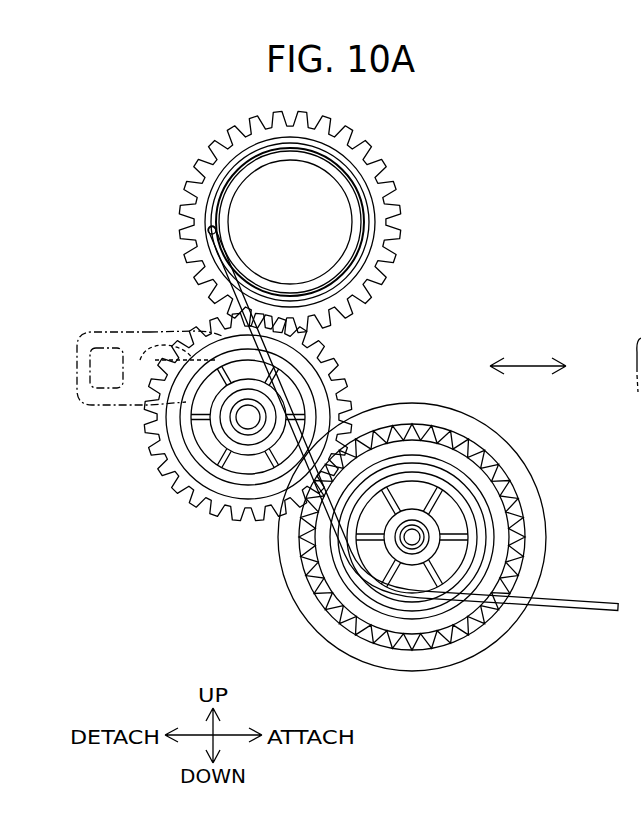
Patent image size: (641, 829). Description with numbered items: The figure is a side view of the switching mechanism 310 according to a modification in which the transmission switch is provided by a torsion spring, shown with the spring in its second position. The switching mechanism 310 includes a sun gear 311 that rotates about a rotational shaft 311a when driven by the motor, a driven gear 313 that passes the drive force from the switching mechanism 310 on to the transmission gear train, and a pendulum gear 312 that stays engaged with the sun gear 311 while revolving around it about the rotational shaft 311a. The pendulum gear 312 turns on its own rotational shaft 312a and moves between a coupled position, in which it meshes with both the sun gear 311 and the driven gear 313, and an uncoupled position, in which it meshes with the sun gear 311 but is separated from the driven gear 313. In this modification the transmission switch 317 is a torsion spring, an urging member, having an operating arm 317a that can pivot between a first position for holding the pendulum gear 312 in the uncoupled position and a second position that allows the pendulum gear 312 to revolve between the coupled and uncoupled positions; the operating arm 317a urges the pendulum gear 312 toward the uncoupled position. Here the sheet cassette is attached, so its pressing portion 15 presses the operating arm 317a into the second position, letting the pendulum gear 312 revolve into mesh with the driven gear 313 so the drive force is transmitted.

The switching mechanism 310 is at (424, 369).
The driven gear 313 is at (384, 162).
The pendulum gear 312 is at (222, 512).
The rotational shaft 312a is at (246, 418).
The sun gear 311 is at (418, 645).
The rotational shaft 311a is at (414, 536).
The transmission switch 317 is at (584, 612).
The operating arm 317a is at (224, 295).
The pressing portion 15 is at (222, 323).